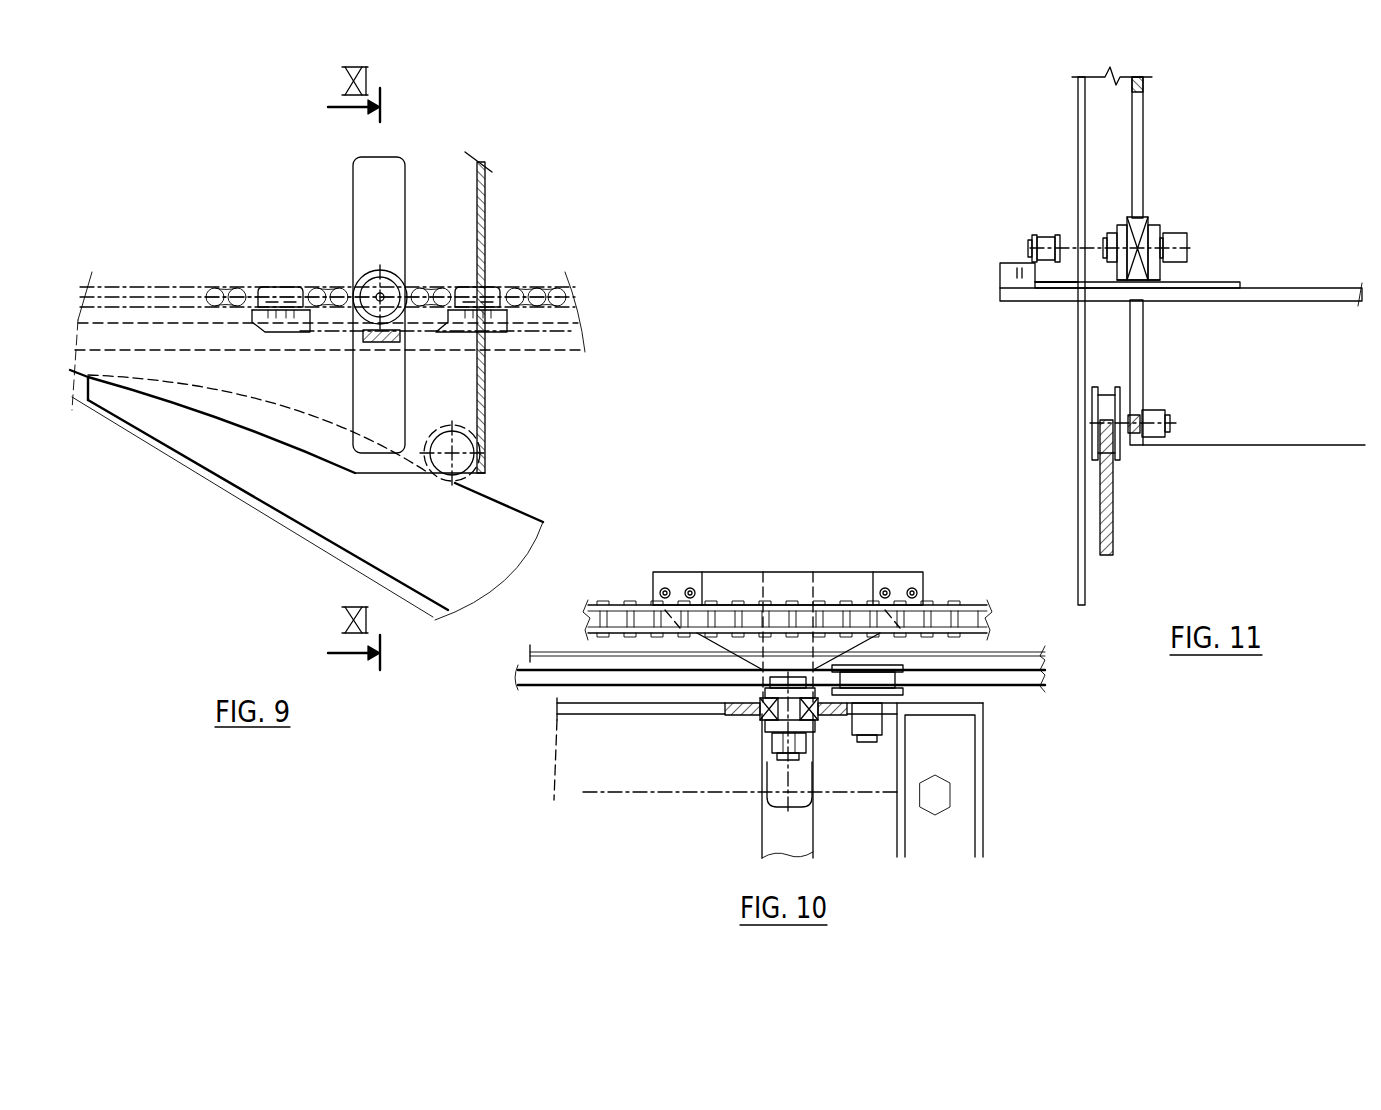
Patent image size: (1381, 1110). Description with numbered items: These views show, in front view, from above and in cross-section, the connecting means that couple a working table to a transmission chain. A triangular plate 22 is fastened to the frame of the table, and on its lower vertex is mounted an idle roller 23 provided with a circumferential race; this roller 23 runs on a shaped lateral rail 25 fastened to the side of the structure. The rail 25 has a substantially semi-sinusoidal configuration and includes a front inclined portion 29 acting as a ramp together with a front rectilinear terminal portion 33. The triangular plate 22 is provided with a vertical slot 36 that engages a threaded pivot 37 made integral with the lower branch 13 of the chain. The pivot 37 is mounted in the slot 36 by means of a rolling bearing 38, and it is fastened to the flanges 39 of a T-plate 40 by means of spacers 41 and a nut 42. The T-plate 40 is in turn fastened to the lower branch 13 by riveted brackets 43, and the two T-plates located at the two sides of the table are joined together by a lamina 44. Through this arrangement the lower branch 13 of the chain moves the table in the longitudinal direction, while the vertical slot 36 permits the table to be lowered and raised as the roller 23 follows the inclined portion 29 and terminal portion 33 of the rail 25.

In FIG. 9, the lower branch 13 is at (423, 288).
In FIG. 10, the lower branch 13 is at (947, 623).
In FIG. 11, the lower branch 13 is at (1045, 245).
In FIG. 9, the triangular plate 22 is at (470, 385).
In FIG. 10, the triangular plate 22 is at (583, 712).
In FIG. 11, the triangular plate 22 is at (1145, 85).
In FIG. 9, the idle roller 23 is at (472, 432).
In FIG. 11, the idle roller 23 is at (1105, 405).
In FIG. 9, the shaped lateral rail 25 is at (233, 487).
In FIG. 10, the shaped lateral rail 25 is at (1010, 686).
In FIG. 11, the shaped lateral rail 25 is at (1113, 500).
In FIG. 9, the front inclined portion 29 is at (503, 505).
In FIG. 9, the front rectilinear terminal portion 33 is at (157, 377).
In FIG. 9, the vertical slot 36 is at (353, 210).
In FIG. 10, the vertical slot 36 is at (765, 728).
In FIG. 11, the vertical slot 36 is at (1138, 385).
In FIG. 10, the threaded pivot 37 is at (785, 713).
In FIG. 11, the threaded pivot 37 is at (1143, 285).
In FIG. 9, the rolling bearing 38 is at (378, 272).
In FIG. 10, the rolling bearing 38 is at (810, 717).
In FIG. 11, the rolling bearing 38 is at (1140, 215).
In FIG. 9, the flange 39 is at (370, 290).
In FIG. 10, the flange 39 is at (745, 708).
In FIG. 11, the flange 39 is at (1165, 282).
In FIG. 9, the T-plate 40 is at (335, 332).
In FIG. 10, the T-plate 40 is at (838, 590).
In FIG. 11, the T-plate 40 is at (1055, 295).
In FIG. 11, the spacer 41 is at (1120, 225).
In FIG. 11, the nut 42 is at (1188, 245).
In FIG. 9, the riveted bracket 43 is at (277, 290).
In FIG. 10, the riveted bracket 43 is at (677, 597).
In FIG. 11, the riveted bracket 43 is at (1028, 235).
In FIG. 9, the lamina 44 is at (392, 340).
In FIG. 10, the lamina 44 is at (795, 833).
In FIG. 11, the lamina 44 is at (1257, 293).